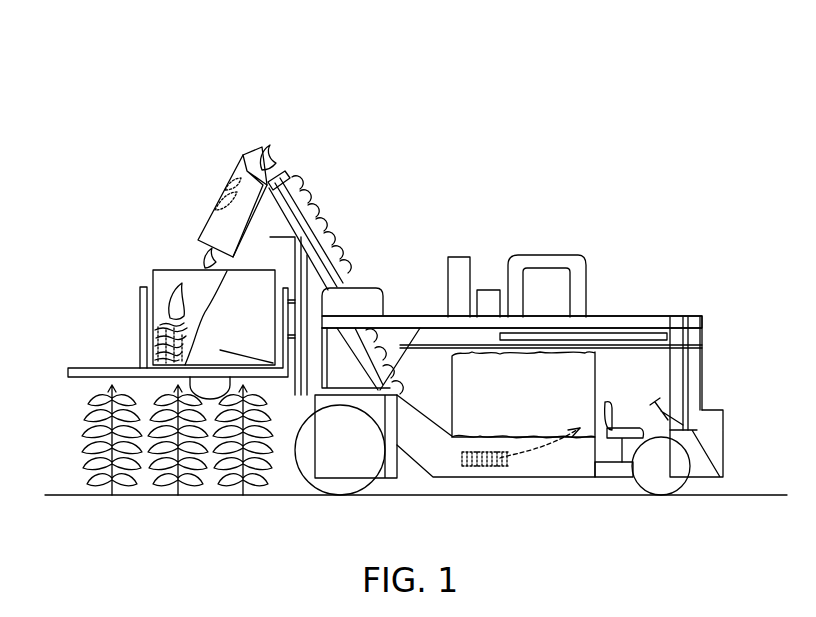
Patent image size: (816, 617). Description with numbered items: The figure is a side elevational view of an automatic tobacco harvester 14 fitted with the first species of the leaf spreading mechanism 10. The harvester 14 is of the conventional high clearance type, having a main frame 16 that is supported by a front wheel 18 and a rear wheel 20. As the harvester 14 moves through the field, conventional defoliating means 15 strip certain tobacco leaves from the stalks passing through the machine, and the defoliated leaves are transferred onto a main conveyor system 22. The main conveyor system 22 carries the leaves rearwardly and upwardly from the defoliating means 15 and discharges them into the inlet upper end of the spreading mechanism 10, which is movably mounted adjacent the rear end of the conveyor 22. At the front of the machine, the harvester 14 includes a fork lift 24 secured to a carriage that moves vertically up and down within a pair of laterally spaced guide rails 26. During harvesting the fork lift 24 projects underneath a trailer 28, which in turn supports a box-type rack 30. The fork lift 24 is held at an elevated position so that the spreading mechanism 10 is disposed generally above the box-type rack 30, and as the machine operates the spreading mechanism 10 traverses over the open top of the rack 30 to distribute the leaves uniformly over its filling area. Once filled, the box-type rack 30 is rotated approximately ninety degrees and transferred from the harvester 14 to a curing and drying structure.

The leaf spreading mechanism 10 is at (221, 117).
The tobacco harvester 14 is at (617, 212).
The defoliating means 15 is at (560, 445).
The main frame 16 is at (640, 326).
The front wheel 18 is at (662, 483).
The rear wheel 20 is at (337, 485).
The main conveyor system 22 is at (312, 230).
The fork lift 24 is at (258, 380).
The guide rails 26 is at (240, 447).
The trailer 28 is at (110, 372).
The box-type rack 30 is at (165, 251).